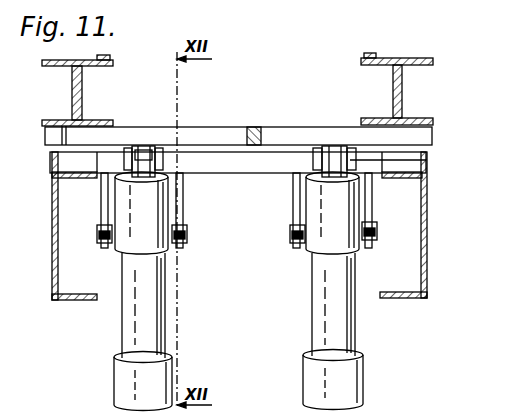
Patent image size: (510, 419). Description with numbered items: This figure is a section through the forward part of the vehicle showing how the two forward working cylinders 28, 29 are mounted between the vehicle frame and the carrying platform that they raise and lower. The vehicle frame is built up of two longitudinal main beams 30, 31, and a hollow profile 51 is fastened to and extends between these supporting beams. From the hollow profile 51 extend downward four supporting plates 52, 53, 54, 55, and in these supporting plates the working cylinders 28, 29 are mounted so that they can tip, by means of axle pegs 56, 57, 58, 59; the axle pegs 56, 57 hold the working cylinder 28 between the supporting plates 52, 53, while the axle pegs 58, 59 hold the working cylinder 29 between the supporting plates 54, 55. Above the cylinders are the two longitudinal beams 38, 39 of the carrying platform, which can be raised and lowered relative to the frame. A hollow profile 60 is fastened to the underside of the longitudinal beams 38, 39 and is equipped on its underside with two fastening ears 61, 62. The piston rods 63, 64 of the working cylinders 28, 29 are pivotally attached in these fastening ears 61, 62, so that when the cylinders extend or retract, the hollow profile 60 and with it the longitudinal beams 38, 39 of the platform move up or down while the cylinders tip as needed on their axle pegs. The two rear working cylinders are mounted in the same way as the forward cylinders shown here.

The working cylinder 28 is at (128, 322).
The working cylinder 29 is at (352, 340).
The longitudinal main beam 30 is at (54, 278).
The longitudinal main beam 31 is at (427, 264).
The longitudinal beam 38 is at (83, 99).
The longitudinal beam 39 is at (402, 95).
The hollow profile 51 is at (212, 142).
The supporting plate 52 is at (104, 193).
The supporting plate 53 is at (183, 196).
The supporting plate 54 is at (295, 200).
The supporting plate 55 is at (372, 200).
The axle peg 56 is at (99, 238).
The axle peg 57 is at (186, 238).
The axle peg 58 is at (292, 238).
The axle peg 59 is at (376, 232).
The hollow profile 60 is at (285, 137).
The fastening ear 61 is at (142, 150).
The fastening ear 62 is at (310, 152).
The piston rod 63 is at (146, 156).
The piston rod 64 is at (426, 156).